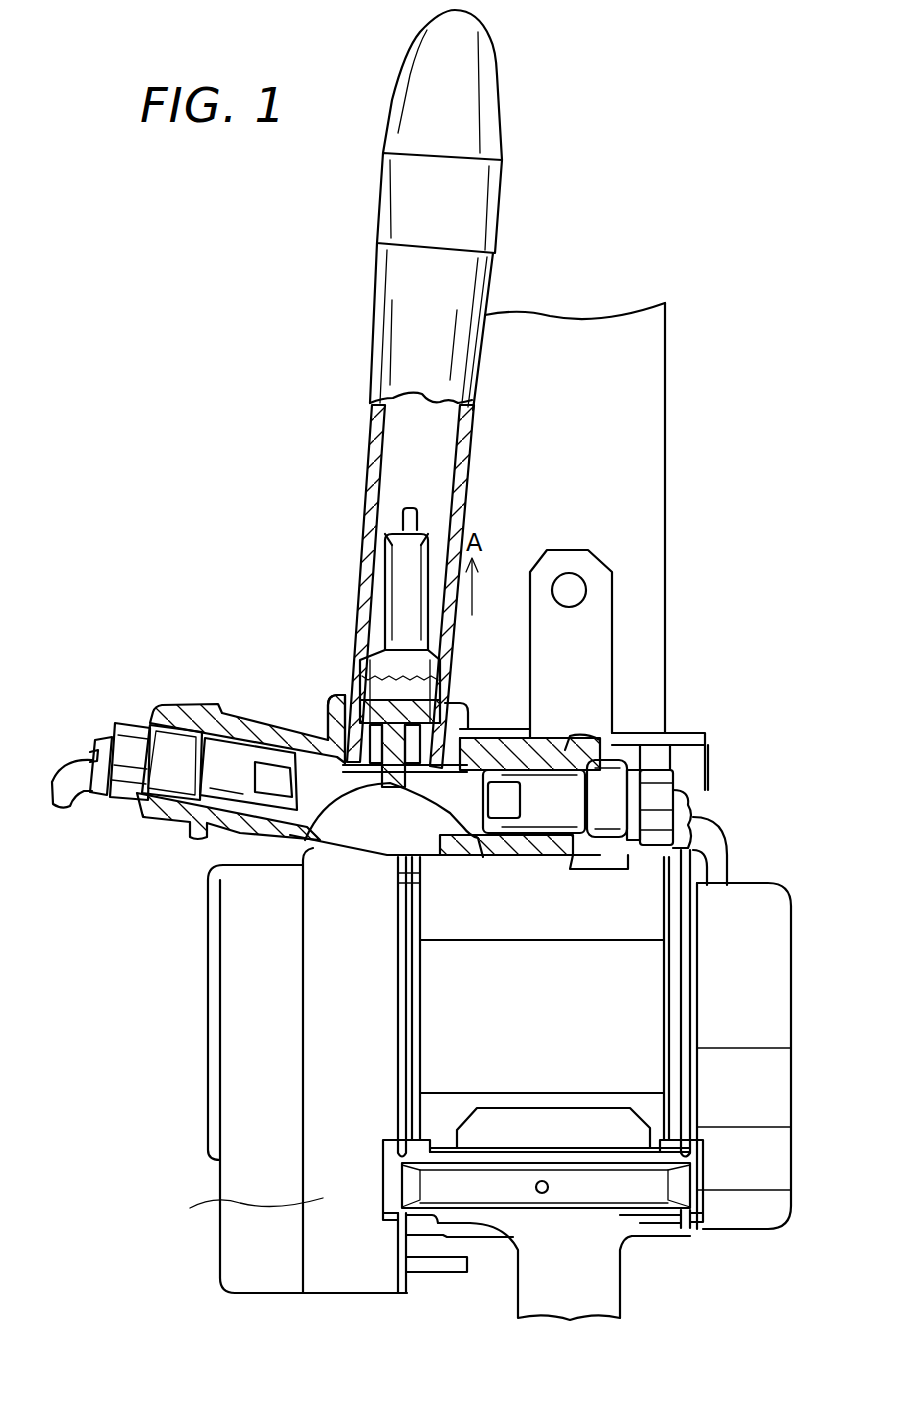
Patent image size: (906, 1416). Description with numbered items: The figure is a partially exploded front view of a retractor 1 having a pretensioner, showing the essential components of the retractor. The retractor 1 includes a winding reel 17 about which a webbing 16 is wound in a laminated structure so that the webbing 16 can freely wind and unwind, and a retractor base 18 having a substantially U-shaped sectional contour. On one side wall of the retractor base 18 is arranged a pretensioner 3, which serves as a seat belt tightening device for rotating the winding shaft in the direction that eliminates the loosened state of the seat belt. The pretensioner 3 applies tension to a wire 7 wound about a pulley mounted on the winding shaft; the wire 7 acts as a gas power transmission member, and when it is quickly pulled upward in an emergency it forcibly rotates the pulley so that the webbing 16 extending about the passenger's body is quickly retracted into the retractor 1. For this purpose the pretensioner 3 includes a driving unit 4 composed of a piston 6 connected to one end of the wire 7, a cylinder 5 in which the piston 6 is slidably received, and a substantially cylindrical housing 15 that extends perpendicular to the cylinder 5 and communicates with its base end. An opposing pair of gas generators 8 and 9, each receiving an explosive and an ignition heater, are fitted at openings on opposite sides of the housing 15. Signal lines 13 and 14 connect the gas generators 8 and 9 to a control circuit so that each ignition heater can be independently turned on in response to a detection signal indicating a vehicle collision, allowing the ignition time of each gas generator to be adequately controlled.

The retractor having a pretensioner 1 is at (683, 676).
The pretensioner 3 is at (325, 1196).
The driving unit 4 is at (333, 676).
The cylinder 5 is at (397, 352).
The piston 6 is at (403, 575).
The wire 7 is at (363, 790).
The gas generator 8 is at (547, 790).
The gas generator 9 is at (238, 752).
The signal line 13 is at (738, 821).
The signal line 14 is at (88, 762).
The housing 15 is at (238, 830).
The webbing 16 is at (655, 457).
The winding reel 17 is at (667, 1003).
The retractor base 18 is at (603, 1262).